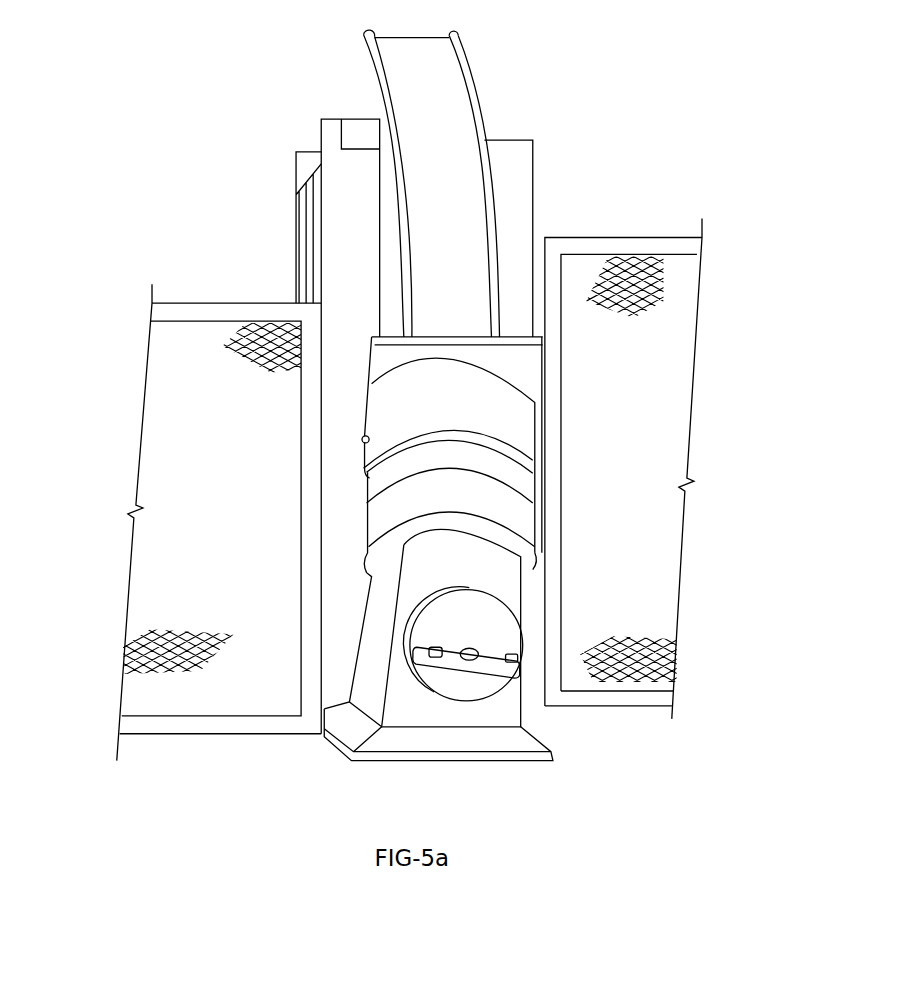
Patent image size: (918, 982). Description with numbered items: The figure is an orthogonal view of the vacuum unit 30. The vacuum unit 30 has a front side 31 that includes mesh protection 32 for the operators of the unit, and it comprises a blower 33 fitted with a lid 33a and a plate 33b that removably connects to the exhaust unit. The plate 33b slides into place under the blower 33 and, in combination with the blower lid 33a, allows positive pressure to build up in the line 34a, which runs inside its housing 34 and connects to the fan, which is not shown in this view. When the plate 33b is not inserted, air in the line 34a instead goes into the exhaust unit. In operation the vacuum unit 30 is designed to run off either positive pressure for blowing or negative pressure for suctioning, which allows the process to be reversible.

The vacuum unit 30 is at (585, 198).
The front side 31 is at (707, 410).
The mesh protection 32 is at (158, 585).
The blower 33 is at (473, 643).
The lid 33a is at (465, 702).
The plate 33b is at (342, 730).
The housing 34 is at (533, 518).
The line 34a is at (482, 570).